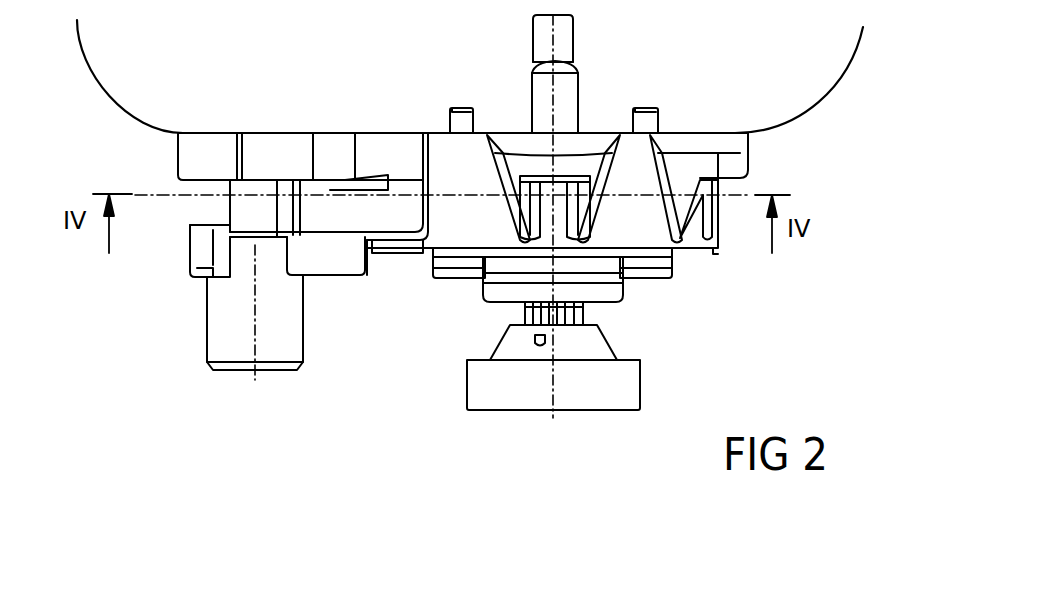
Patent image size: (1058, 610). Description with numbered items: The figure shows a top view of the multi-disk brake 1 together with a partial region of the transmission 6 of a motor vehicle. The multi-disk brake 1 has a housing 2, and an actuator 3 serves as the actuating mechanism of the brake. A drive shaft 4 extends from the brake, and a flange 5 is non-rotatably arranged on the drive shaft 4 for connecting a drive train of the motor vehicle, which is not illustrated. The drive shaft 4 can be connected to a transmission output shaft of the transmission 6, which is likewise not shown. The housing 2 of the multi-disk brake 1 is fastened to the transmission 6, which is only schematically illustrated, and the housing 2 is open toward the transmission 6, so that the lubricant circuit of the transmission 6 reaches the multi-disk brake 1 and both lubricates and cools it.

The multi-disk brake 1 is at (683, 270).
The housing 2 is at (713, 253).
The actuator 3 is at (306, 365).
The drive shaft 4 is at (565, 93).
The flange 5 is at (615, 380).
The transmission 6 is at (828, 90).